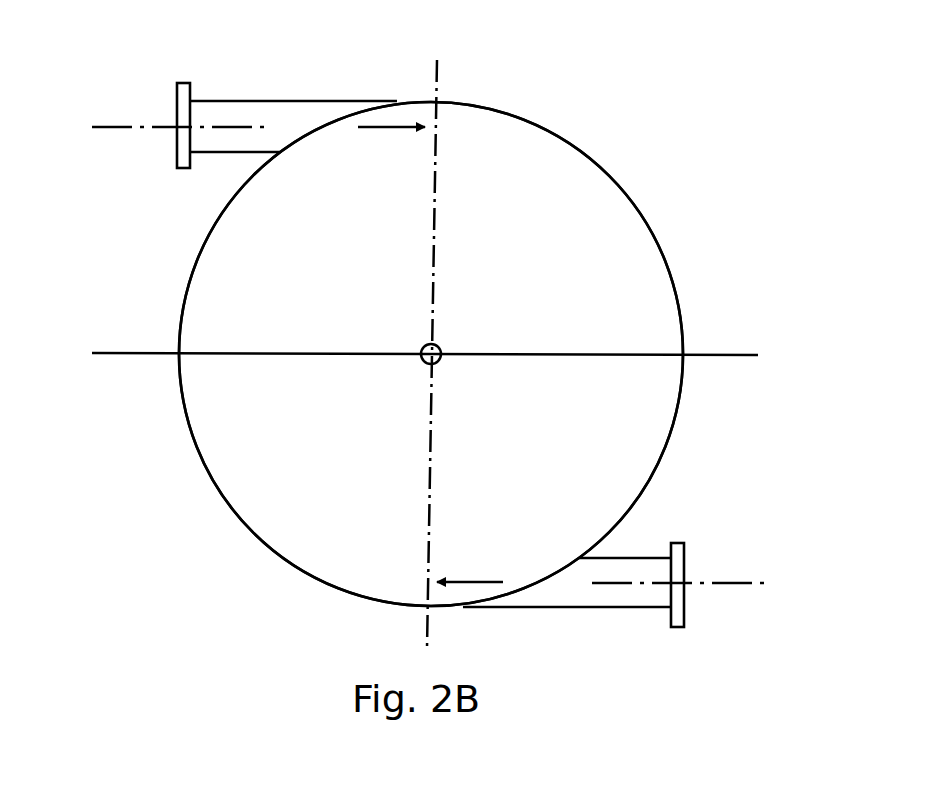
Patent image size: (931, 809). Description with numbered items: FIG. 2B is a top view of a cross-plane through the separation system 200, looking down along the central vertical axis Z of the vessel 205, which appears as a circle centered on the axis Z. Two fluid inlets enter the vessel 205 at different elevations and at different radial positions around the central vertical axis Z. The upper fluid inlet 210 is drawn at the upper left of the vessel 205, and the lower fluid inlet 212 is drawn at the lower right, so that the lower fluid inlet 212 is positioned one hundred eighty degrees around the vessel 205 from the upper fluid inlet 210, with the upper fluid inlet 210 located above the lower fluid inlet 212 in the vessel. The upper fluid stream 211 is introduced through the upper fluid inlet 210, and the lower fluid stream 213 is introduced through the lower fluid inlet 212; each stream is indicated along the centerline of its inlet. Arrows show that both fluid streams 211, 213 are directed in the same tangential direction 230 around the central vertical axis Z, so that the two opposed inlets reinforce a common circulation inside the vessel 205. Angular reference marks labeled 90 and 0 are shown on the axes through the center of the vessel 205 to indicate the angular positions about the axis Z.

The separation system 200 is at (665, 158).
The vessel 205 is at (682, 313).
The upper fluid inlet 210 is at (283, 100).
The upper fluid stream 211 is at (127, 120).
The lower fluid inlet 212 is at (575, 608).
The lower fluid stream 213 is at (733, 585).
The tangential direction 230 is at (383, 132).
The 90 degree position 90 is at (435, 49).
The 0 degree position 0 is at (775, 358).
The central vertical axis Z is at (443, 360).